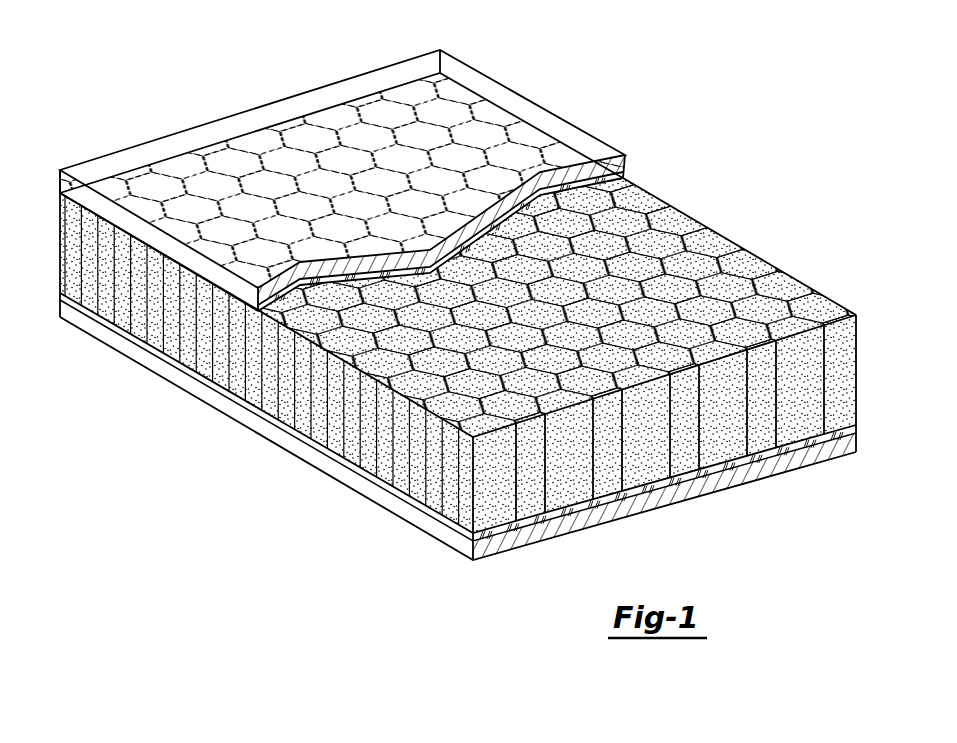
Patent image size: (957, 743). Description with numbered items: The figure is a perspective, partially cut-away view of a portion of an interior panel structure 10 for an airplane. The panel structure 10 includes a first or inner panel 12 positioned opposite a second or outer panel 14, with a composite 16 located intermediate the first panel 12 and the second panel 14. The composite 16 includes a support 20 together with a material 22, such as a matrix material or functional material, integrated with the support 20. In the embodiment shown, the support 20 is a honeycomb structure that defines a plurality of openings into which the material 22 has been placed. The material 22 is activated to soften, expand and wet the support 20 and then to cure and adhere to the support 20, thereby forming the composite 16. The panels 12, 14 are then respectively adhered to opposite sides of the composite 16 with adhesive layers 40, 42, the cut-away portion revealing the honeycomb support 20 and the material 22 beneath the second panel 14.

The interior panel structure 10 is at (654, 111).
The first panel 12 is at (687, 493).
The second panel 14 is at (497, 85).
The composite 16 is at (762, 452).
The support 20 is at (733, 250).
The material 22 is at (670, 227).
The adhesive layer 40 is at (458, 530).
The adhesive layer 42 is at (620, 180).